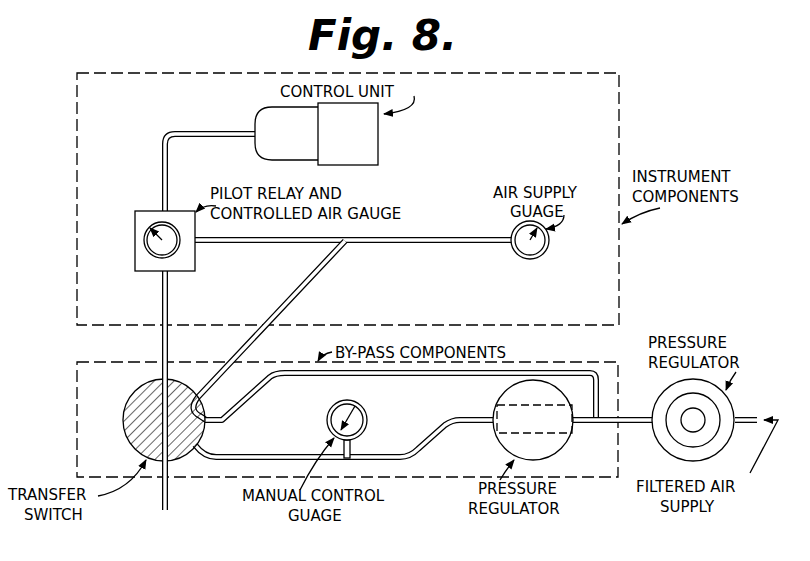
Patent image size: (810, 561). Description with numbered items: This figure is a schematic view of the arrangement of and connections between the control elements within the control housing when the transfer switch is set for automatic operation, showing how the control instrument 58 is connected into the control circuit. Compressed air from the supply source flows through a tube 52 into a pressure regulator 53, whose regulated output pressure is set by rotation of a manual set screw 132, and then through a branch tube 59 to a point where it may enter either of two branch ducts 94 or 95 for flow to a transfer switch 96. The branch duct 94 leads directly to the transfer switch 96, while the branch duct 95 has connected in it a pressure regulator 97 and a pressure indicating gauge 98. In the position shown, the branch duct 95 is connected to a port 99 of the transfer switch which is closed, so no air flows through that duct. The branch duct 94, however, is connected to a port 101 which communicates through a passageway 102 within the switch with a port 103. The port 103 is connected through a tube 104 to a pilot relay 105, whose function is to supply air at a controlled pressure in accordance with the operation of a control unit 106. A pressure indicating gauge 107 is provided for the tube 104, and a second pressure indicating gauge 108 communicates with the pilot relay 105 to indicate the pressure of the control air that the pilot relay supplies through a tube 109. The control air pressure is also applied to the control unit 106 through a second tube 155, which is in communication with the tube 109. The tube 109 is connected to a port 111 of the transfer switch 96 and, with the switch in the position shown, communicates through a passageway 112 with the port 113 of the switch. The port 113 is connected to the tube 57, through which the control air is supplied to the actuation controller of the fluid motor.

The tube 52 is at (746, 424).
The pressure regulator 53 is at (734, 406).
The tube 57 is at (160, 504).
The control instrument 58 is at (622, 108).
The branch tube 59 is at (630, 417).
The branch duct 94 is at (578, 372).
The branch duct 95 is at (580, 424).
The transfer switch 96 is at (132, 392).
The pressure regulator 97 is at (496, 399).
The pressure indicating gauge 98 is at (352, 402).
The port 99 is at (180, 462).
The port 101 is at (206, 424).
The passageway 102 is at (197, 404).
The port 103 is at (190, 380).
The tube 104 is at (324, 262).
The pilot relay 105 is at (134, 222).
The control unit 106 is at (257, 118).
The pressure indicating gauge 107 is at (530, 262).
The pressure indicating gauge 108 is at (178, 252).
The tube 109 is at (162, 300).
The port 111 is at (162, 382).
The passageway 112 is at (180, 413).
The port 113 is at (156, 452).
The manual set screw 132 is at (702, 411).
The second tube 155 is at (162, 161).